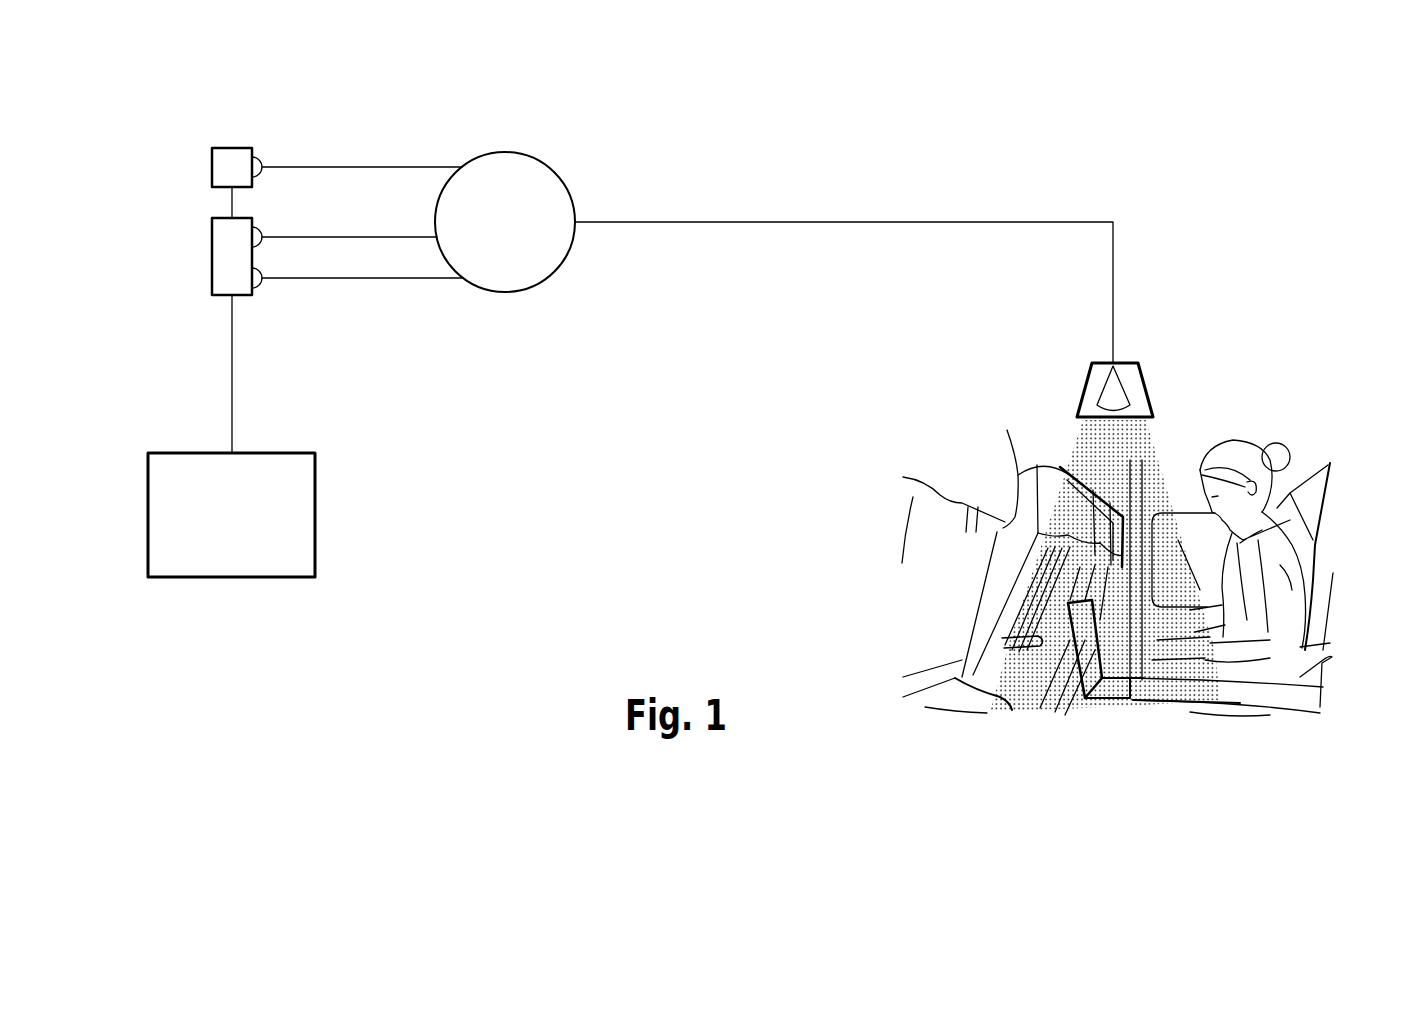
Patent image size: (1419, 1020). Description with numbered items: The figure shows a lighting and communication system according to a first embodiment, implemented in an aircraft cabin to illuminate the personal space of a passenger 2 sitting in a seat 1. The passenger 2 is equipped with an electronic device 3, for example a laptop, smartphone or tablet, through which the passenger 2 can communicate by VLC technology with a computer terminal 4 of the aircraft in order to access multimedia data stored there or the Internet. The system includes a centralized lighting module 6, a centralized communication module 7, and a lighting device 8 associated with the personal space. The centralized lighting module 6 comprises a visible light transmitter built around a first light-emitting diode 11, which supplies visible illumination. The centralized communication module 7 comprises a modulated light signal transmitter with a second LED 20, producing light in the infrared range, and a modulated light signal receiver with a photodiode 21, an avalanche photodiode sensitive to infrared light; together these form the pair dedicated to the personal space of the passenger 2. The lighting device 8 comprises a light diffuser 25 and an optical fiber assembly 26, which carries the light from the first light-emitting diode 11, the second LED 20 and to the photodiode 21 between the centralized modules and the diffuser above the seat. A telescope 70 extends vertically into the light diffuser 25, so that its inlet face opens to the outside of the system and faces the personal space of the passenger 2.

The seat 1 is at (1318, 538).
The passenger 2 is at (1283, 601).
The electronic device 3 is at (1090, 708).
The computer terminal 4 is at (307, 492).
The centralized lighting module 6 is at (215, 166).
The centralized communication module 7 is at (215, 262).
The lighting device 8 is at (721, 282).
The first light-emitting diode 11 is at (256, 160).
The second LED 20 is at (262, 228).
The photodiode 21 is at (262, 287).
The light diffuser 25 is at (1086, 380).
The optical fiber assembly 26 is at (502, 142).
The telescope 70 is at (1120, 388).